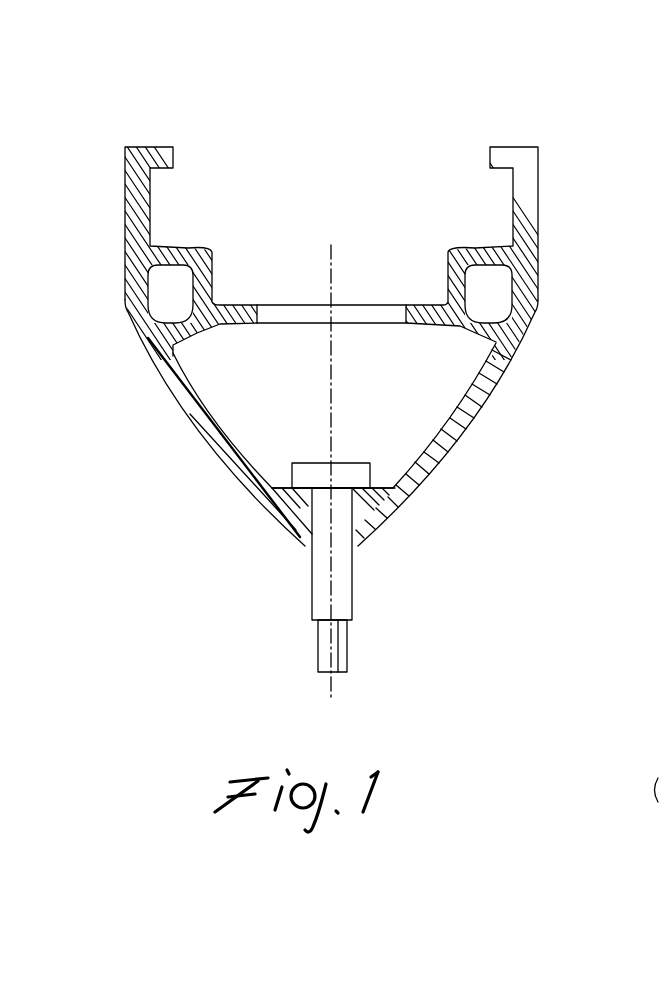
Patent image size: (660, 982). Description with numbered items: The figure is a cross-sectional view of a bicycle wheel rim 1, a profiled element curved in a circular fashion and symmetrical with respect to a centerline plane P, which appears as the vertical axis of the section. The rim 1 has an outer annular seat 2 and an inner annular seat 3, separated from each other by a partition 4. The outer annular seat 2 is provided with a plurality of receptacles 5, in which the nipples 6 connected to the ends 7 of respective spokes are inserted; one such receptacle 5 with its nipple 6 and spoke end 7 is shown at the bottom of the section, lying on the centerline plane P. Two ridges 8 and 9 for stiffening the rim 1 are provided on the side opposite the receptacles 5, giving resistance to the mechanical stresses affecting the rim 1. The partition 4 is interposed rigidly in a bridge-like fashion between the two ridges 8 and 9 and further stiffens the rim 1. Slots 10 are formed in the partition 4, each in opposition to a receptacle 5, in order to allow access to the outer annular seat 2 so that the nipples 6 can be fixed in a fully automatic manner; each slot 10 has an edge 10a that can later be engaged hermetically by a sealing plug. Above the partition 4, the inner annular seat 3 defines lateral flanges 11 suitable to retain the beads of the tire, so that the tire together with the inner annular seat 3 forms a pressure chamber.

The bicycle wheel rim 1 is at (170, 123).
The outer annular seat 2 is at (399, 405).
The inner annular seat 3 is at (400, 226).
The partition 4 is at (428, 325).
The receptacle 5 is at (352, 512).
The nipple 6 is at (340, 578).
The spoke end 7 is at (337, 640).
The ridge 8 is at (495, 305).
The ridge 9 is at (163, 303).
The slot 10 is at (312, 316).
The edge of the slot 10a is at (264, 323).
The lateral flange 11 is at (132, 200).
The centerline plane P is at (332, 690).